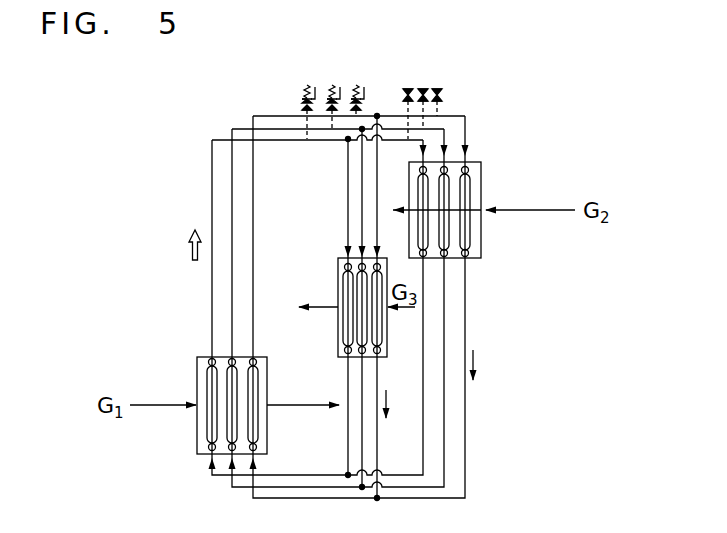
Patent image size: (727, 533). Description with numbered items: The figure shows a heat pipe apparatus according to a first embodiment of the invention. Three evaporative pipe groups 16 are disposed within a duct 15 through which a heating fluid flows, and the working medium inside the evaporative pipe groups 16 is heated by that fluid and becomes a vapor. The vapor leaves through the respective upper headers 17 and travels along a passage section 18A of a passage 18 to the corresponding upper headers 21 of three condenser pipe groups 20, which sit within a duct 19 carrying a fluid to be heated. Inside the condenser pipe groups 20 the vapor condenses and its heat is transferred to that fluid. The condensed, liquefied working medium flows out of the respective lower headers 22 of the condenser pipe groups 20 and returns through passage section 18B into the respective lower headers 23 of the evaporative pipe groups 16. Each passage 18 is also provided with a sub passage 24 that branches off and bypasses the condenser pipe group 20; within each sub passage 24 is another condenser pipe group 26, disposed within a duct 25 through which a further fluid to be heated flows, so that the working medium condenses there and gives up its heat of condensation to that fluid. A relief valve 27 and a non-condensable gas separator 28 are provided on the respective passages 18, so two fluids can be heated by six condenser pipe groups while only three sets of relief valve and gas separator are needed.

The duct 15 is at (206, 355).
The evaporative pipe group 16 is at (253, 426).
The upper header 17 is at (253, 377).
The passage 18 is at (211, 172).
The passage section 18A is at (208, 283).
The passage section 18B is at (466, 318).
The duct 19 is at (470, 162).
The condenser pipe group 20 is at (470, 193).
The upper header 21 is at (465, 171).
The lower header 22 is at (470, 257).
The lower header 23 is at (253, 454).
The sub passage 24 is at (347, 197).
The duct 25 is at (338, 258).
The condenser pipe group 26 is at (377, 333).
The relief valve 27 is at (302, 103).
The non-condensable gas separator 28 is at (439, 95).